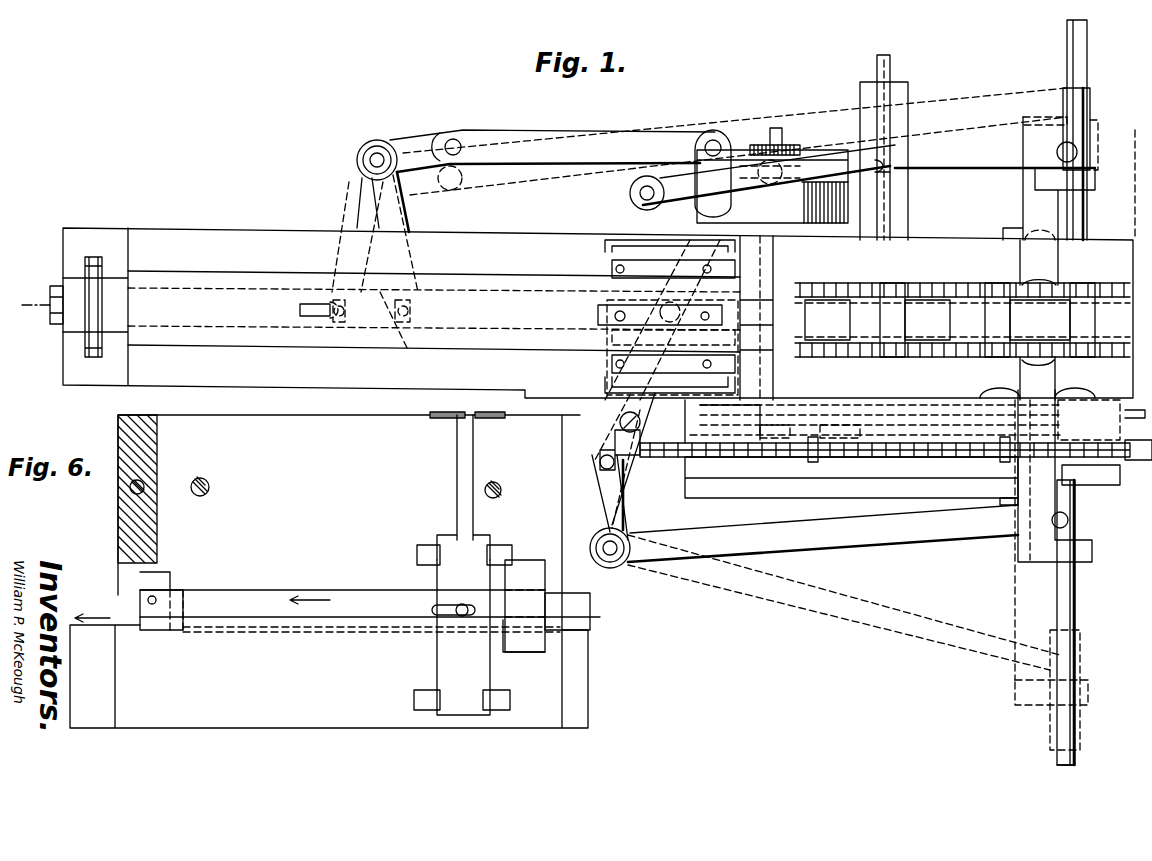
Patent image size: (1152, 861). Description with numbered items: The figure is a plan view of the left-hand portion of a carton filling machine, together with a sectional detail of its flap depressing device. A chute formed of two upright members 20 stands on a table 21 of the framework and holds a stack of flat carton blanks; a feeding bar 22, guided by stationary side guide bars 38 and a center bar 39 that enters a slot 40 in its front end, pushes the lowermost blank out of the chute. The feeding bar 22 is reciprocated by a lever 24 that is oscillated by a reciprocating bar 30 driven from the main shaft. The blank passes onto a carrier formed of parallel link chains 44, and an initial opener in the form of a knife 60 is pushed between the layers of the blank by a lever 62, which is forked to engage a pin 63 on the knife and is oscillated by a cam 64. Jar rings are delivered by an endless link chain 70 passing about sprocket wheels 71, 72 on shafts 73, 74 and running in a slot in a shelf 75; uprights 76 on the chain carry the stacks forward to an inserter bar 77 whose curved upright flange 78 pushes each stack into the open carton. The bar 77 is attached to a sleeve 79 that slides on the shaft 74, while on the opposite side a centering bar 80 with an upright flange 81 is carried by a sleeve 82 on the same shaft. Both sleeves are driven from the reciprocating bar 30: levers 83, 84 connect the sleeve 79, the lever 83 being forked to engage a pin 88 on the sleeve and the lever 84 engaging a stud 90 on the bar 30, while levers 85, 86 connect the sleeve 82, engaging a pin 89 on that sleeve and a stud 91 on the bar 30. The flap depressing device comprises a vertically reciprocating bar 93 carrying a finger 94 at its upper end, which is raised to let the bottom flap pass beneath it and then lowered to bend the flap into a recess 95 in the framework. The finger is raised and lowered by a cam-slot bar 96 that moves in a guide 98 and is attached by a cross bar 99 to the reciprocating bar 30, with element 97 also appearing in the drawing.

In FIG. 1, the table 21 is at (268, 229).
In FIG. 1, the reciprocating bar 30 is at (48, 324).
In FIG. 1, the lever 24 is at (298, 308).
In FIG. 1, the reciprocating bar 22 is at (312, 345).
In FIG. 1, the pin 91 is at (409, 350).
In FIG. 1, the lever 86 is at (422, 133).
In FIG. 1, the pin 63 is at (893, 165).
In FIG. 1, the lever 62 is at (678, 150).
In FIG. 1, the cam 64 is at (727, 205).
In FIG. 1, the knife 60 is at (877, 70).
In FIG. 1, the lever 85 is at (975, 169).
In FIG. 1, the bar 80 is at (1040, 212).
In FIG. 1, the upright flange 81 is at (1040, 285).
In FIG. 1, the sleeve 82 is at (1067, 90).
In FIG. 1, the pin 89 is at (1060, 155).
In FIG. 1, the upright members 20 is at (670, 316).
In FIG. 1, the side guide bars 38 is at (588, 363).
In FIG. 1, the center bar 39 is at (598, 312).
In FIG. 1, the pin 90 is at (685, 315).
In FIG. 1, the cross bar 99 is at (673, 343).
In FIG. 6, the cross bar 99 is at (125, 612).
In FIG. 1, the slot 40 is at (775, 318).
In FIG. 1, the link chains 44 is at (950, 284).
In FIG. 1, the upright flange 78 is at (1028, 385).
In FIG. 1, the recess 95 is at (990, 398).
In FIG. 6, the recess 95 is at (490, 414).
In FIG. 1, the finger 94 is at (1064, 383).
In FIG. 6, the finger 94 is at (460, 414).
In FIG. 1, the shaft 73 is at (650, 400).
In FIG. 1, the lever 84 is at (607, 447).
In FIG. 1, the lever 83 is at (600, 512).
In FIG. 1, the link chain 70 is at (880, 451).
In FIG. 1, the uprights 76 is at (810, 458).
In FIG. 1, the sprocket wheel 71 is at (720, 454).
In FIG. 1, the shelf 75 is at (775, 470).
In FIG. 1, the bar 77 is at (1015, 517).
In FIG. 1, the sprocket wheel 72 is at (1065, 452).
In FIG. 1, the pin 88 is at (1052, 520).
In FIG. 1, the sleeve 79 is at (1076, 592).
In FIG. 1, the shaft 74 is at (1078, 478).
In FIG. 1, the bar 96 is at (1105, 430).
In FIG. 6, the bar 96 is at (355, 590).
In FIG. 6, the vertically reciprocating bar 93 is at (455, 490).
In FIG. 6, the block 97 is at (525, 606).
In FIG. 6, the guide 98 is at (520, 652).